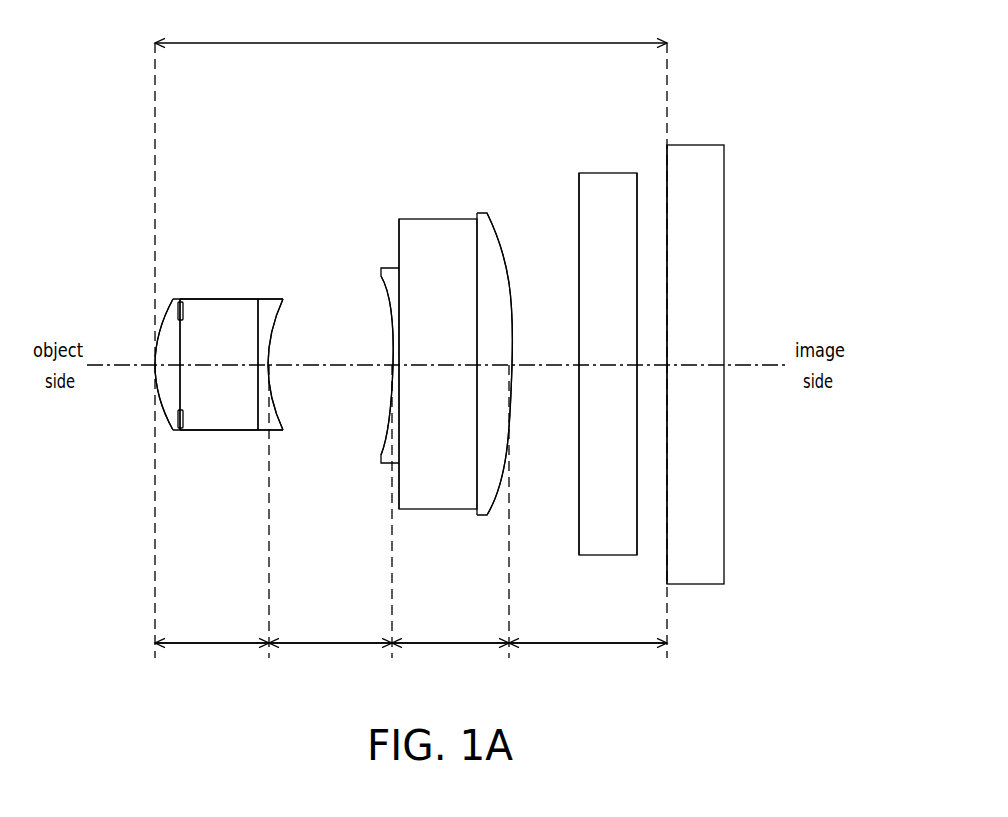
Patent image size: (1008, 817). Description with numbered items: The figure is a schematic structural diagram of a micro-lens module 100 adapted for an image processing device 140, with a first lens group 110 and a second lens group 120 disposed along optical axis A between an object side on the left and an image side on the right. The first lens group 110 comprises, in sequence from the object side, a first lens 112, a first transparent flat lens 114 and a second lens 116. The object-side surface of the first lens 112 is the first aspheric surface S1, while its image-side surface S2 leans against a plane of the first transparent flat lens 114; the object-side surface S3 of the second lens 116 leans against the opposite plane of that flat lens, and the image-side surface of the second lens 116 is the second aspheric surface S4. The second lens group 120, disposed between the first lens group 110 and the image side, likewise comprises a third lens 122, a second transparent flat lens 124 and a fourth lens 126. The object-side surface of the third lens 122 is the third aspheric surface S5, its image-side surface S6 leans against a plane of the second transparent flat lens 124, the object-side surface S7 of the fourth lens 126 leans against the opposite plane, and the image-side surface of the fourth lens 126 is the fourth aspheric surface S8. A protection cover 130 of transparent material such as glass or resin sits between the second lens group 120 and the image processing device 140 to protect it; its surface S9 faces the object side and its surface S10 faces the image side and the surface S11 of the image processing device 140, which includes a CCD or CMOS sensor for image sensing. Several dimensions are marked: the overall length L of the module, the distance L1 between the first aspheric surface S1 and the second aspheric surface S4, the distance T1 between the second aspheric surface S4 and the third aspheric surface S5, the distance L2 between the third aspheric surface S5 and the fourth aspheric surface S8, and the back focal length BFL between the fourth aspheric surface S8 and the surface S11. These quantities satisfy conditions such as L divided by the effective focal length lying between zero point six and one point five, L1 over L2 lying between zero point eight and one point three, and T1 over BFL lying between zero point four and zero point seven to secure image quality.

The micro-lens module 100 is at (792, 677).
The first lens group 110 is at (228, 378).
The first lens 112 is at (170, 412).
The first transparent flat lens 114 is at (220, 410).
The second lens 116 is at (279, 397).
The second lens group 120 is at (421, 384).
The third lens 122 is at (385, 465).
The second transparent flat lens 124 is at (447, 511).
The fourth lens 126 is at (487, 400).
The protection cover 130 is at (608, 557).
The image processing device 140 is at (690, 586).
The optical axis A is at (131, 362).
The first aspheric surface S1 is at (159, 302).
The surface of the first lens S2 is at (182, 335).
The surface of the second lens S3 is at (257, 335).
The second aspheric surface S4 is at (276, 320).
The third aspheric surface S5 is at (392, 298).
The surface of the third lens S6 is at (399, 239).
The surface of the fourth lens S7 is at (477, 247).
The fourth aspheric surface S8 is at (506, 244).
The surface of the protection cover S9 is at (579, 208).
The surface of the protection cover S10 is at (638, 207).
The surface of the image processing device S11 is at (667, 165).
The overall length L is at (411, 28).
The distance between the first aspheric surface and the second aspheric surface L1 is at (212, 665).
The distance between the second aspheric surface and the third aspheric surface T1 is at (330, 665).
The distance between the third aspheric surface and the fourth aspheric surface L2 is at (450, 665).
The back focal length BFL is at (588, 665).